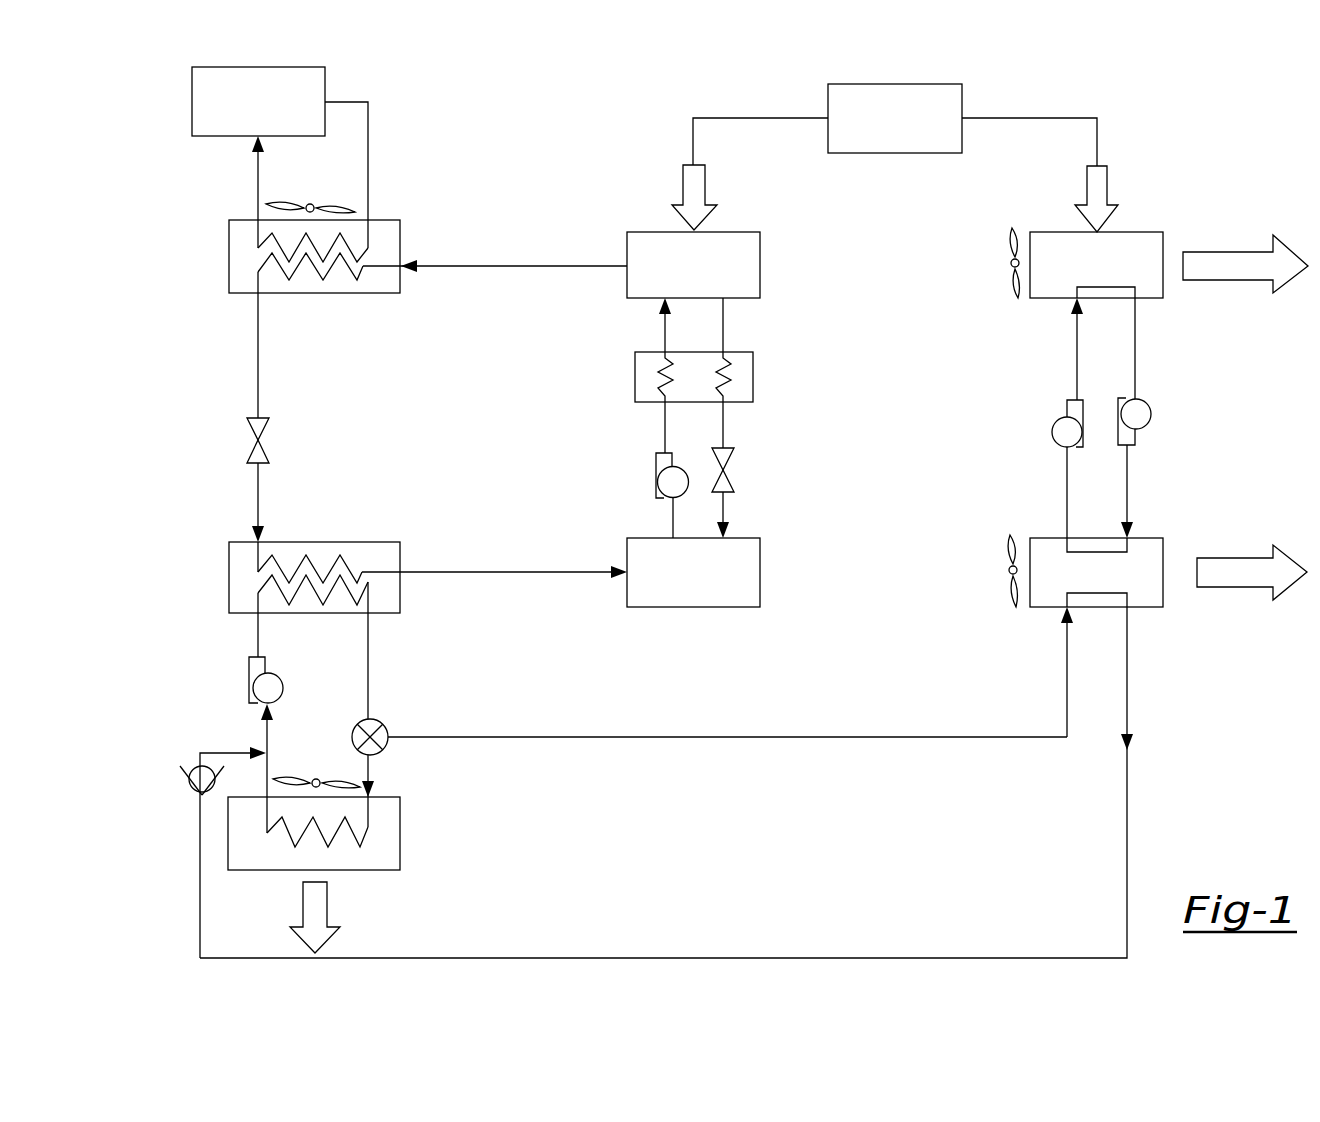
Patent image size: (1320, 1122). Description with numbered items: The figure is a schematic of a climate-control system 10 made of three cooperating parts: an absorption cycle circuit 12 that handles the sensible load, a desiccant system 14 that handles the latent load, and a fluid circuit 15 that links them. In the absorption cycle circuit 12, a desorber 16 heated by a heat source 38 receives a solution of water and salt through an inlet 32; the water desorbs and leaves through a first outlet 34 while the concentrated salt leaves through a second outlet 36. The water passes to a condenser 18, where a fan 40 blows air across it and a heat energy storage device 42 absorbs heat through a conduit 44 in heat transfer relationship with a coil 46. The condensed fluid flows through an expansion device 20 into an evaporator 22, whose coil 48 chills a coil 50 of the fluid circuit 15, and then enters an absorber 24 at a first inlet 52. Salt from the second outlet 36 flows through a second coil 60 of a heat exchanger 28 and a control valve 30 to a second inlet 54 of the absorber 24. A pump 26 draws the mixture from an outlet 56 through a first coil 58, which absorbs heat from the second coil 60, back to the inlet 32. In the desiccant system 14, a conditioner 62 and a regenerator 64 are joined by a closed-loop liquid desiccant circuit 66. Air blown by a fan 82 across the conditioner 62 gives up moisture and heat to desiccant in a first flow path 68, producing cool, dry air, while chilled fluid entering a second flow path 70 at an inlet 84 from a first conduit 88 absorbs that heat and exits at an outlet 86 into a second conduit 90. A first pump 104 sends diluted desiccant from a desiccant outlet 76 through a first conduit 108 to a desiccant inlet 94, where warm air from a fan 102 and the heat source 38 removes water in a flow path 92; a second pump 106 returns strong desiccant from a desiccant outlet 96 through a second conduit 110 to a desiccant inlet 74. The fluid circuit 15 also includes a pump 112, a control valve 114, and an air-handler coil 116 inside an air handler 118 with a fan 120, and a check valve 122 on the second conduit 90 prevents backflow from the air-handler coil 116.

The climate-control system 10 is at (588, 98).
The absorption cycle circuit 12 is at (790, 303).
The desiccant system 14 is at (963, 477).
The fluid circuit 15 is at (562, 682).
The desorber 16 is at (760, 244).
The condenser 18 is at (301, 273).
The expansion device 20 is at (248, 428).
The evaporator 22 is at (284, 566).
The absorber 24 is at (760, 573).
The pump 26 is at (656, 487).
The heat exchanger 28 is at (684, 368).
The control valve 30 is at (733, 480).
The inlet 32 is at (660, 305).
The first outlet 34 is at (627, 262).
The second outlet 36 is at (725, 300).
The heat source 38 is at (962, 98).
The fan 40 is at (333, 205).
The heat energy storage device 42 is at (325, 77).
The conduit 44 is at (343, 240).
The coil 46 is at (345, 266).
The coil 48 is at (347, 570).
The coil 50 is at (345, 600).
The first inlet 52 is at (627, 570).
The second inlet 54 is at (727, 538).
The outlet 56 is at (662, 538).
The first coil 58 is at (660, 372).
The second coil 60 is at (730, 375).
The conditioner 62 is at (1139, 577).
The regenerator 64 is at (1096, 255).
The liquid desiccant circuit 66 is at (1038, 470).
The first flow path 68 is at (1087, 550).
The second flow path 70 is at (1087, 595).
The desiccant inlet 74 is at (1130, 540).
The desiccant outlet 76 is at (1067, 540).
The fan 82 is at (1010, 595).
The inlet 84 is at (1065, 607).
The outlet 86 is at (1130, 607).
The first conduit 88 is at (840, 740).
The second conduit 90 is at (845, 958).
The flow path 92 is at (1097, 288).
The desiccant inlet 94 is at (1073, 290).
The desiccant outlet 96 is at (1143, 290).
The fan 102 is at (1010, 240).
The first pump 104 is at (1052, 437).
The second pump 106 is at (1150, 425).
The first conduit 108 is at (1075, 375).
The second conduit 110 is at (1140, 390).
The pump 112 is at (249, 680).
The control valve 114 is at (380, 722).
The air-handler coil 116 is at (285, 835).
The air handler 118 is at (361, 822).
The fan 120 is at (330, 780).
The check valve 122 is at (190, 772).